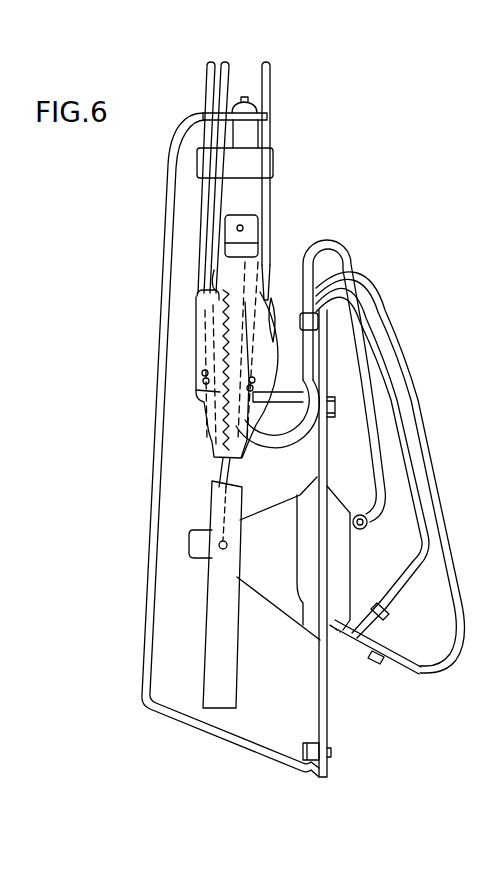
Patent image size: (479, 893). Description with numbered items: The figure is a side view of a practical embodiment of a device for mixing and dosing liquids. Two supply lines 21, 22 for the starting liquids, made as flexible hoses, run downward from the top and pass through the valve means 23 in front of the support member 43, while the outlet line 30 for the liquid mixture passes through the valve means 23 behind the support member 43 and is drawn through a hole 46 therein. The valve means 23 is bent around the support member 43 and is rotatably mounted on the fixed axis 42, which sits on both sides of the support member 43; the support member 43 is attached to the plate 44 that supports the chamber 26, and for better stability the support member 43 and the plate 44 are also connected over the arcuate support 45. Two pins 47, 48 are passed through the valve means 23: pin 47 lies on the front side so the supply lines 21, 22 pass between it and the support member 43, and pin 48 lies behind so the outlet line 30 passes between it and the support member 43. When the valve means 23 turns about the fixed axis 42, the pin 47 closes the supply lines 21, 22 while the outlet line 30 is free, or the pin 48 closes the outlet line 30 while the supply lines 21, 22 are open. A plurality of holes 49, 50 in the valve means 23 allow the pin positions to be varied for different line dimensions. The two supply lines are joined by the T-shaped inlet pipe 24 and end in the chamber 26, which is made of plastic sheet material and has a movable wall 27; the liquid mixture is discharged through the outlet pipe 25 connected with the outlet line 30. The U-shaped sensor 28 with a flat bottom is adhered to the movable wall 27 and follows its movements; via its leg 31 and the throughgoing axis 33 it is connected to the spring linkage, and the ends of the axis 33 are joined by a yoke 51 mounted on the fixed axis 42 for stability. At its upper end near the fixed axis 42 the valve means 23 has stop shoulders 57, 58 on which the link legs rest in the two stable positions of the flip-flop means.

The supply line 21 is at (207, 90).
The supply line 22 is at (226, 76).
The valve means 23 is at (266, 262).
The T-shaped inlet pipe 24 is at (362, 656).
The outlet pipe 25 is at (368, 528).
The chamber 26 is at (350, 572).
The movable wall 27 is at (303, 626).
The sensor 28 is at (258, 592).
The outlet line 30 is at (271, 76).
The leg 31 is at (278, 563).
The throughgoing axis 33 is at (207, 554).
The fixed axis 42 is at (243, 228).
The support member 43 is at (248, 132).
The plate 44 is at (327, 715).
The arcuate support 45 is at (190, 726).
The hole 46 is at (230, 314).
The pin 47 is at (208, 389).
The pin 48 is at (272, 392).
The holes 49 is at (203, 380).
The holes 50 is at (262, 352).
The yoke 51 is at (238, 684).
The stop shoulder 57 is at (214, 276).
The stop shoulder 58 is at (275, 316).